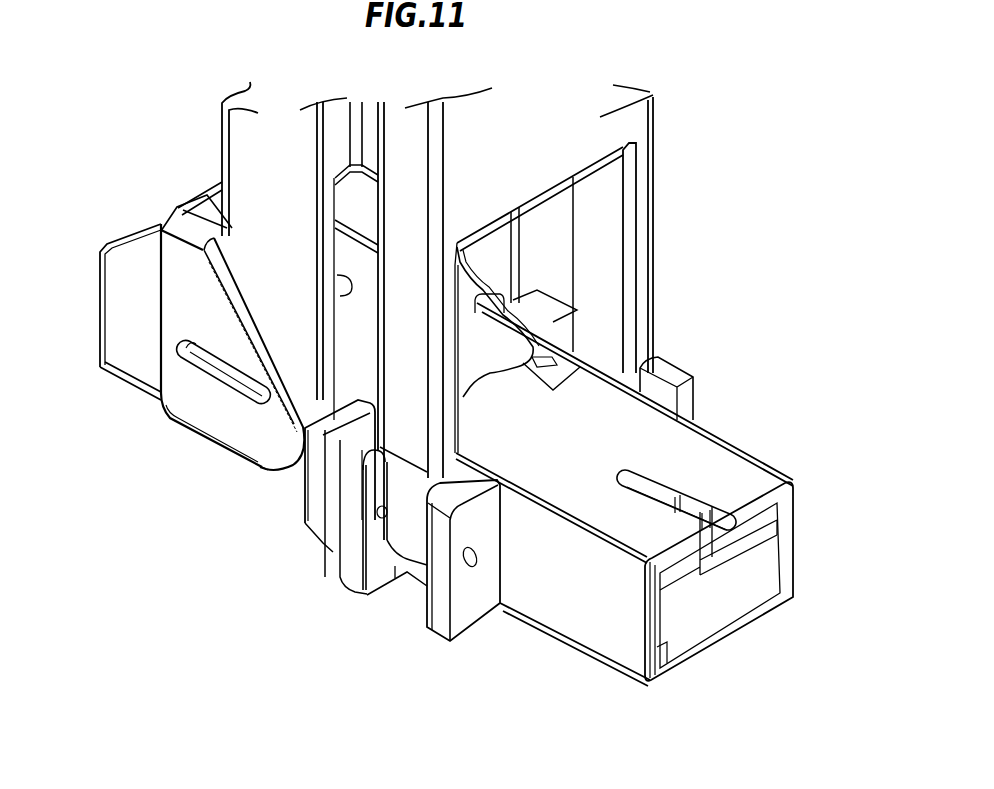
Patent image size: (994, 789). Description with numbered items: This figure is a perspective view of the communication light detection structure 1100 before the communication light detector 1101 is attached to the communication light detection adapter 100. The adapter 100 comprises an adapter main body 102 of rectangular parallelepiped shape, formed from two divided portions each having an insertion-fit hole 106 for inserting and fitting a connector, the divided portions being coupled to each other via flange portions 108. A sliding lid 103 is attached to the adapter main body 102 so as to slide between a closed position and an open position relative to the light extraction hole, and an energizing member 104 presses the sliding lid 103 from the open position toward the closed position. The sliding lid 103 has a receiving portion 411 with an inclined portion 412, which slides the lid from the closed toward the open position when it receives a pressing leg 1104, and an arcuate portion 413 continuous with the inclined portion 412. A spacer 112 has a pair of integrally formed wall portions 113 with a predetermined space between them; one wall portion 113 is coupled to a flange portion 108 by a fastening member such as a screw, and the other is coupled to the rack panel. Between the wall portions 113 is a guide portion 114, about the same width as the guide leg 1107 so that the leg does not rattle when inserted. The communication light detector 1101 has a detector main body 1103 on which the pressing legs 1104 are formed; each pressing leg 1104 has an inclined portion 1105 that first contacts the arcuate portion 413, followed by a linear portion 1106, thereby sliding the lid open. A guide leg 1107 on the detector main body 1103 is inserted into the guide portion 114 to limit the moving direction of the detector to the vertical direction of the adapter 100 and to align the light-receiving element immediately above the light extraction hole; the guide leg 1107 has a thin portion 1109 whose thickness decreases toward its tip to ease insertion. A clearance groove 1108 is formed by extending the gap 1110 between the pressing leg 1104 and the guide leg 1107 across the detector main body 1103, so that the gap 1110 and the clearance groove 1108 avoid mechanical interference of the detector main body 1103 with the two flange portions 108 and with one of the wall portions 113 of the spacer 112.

The communication light detection adapter 100 is at (707, 393).
The adapter main body 102 is at (617, 648).
The sliding lid 103 is at (220, 432).
The energizing member 104 is at (260, 357).
The insertion-fit hole 106 is at (705, 628).
The flange portion 108 is at (397, 527).
The spacer 112 is at (424, 630).
The wall portion 113 is at (395, 572).
The guide portion 114 is at (427, 570).
The receiving portion 411 is at (165, 368).
The inclined portion 412 is at (237, 300).
The arcuate portion 413 is at (325, 435).
The communication light detection structure 1100 is at (708, 103).
The communication light detector 1101 is at (192, 108).
The detector main body 1103 is at (540, 167).
The pressing leg 1104 is at (228, 128).
The inclined portion 1105 is at (297, 447).
The linear portion 1106 is at (222, 148).
The guide leg 1107 is at (447, 282).
The clearance groove 1108 is at (360, 222).
The thin portion 1109 is at (353, 573).
The gap 1110 is at (355, 357).